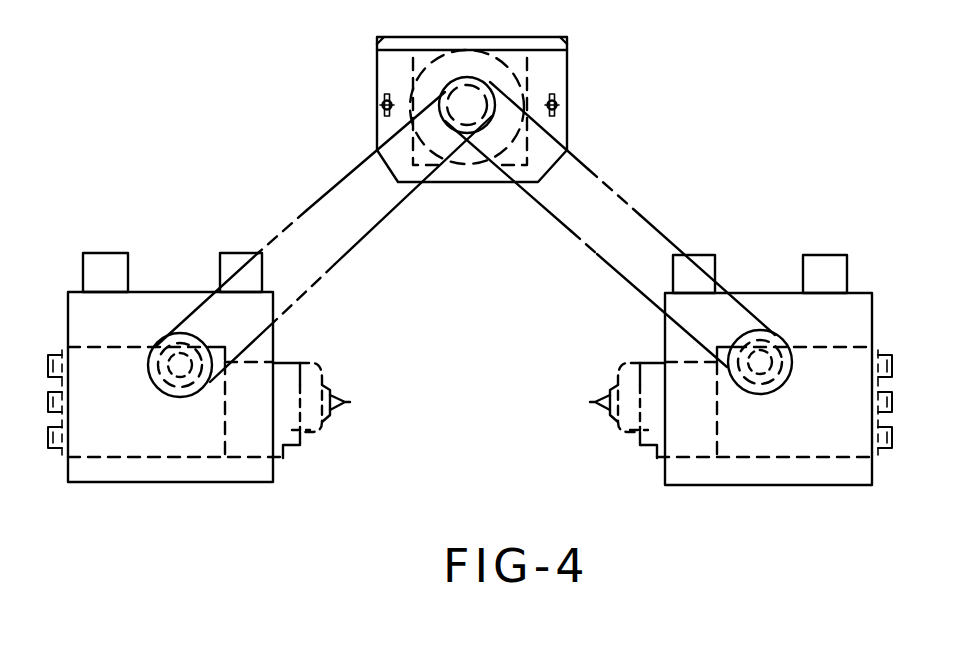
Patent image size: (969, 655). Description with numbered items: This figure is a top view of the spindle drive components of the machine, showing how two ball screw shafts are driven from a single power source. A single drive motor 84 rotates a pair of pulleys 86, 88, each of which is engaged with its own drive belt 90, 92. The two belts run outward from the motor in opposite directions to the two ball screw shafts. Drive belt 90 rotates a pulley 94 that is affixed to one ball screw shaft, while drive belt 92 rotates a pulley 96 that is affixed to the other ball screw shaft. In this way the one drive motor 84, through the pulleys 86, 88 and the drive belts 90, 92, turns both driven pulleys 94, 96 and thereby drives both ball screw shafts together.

The drive motor 84 is at (524, 38).
The pulley 86 is at (490, 86).
The pulley 88 is at (503, 97).
The drive belt 90 is at (648, 222).
The drive belt 92 is at (327, 190).
The pulley 94 is at (754, 331).
The pulley 96 is at (178, 333).